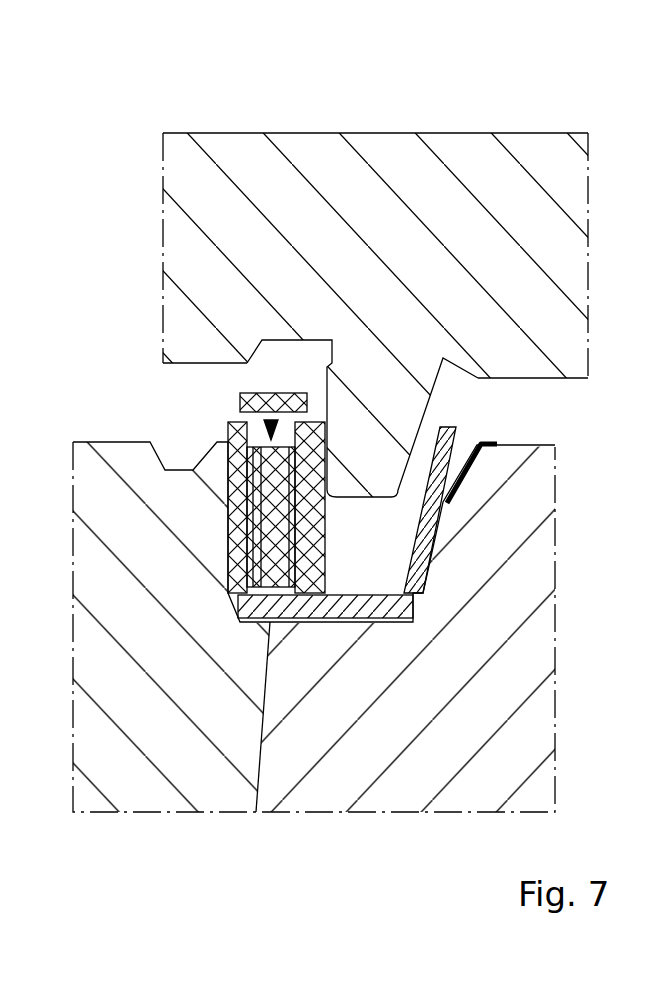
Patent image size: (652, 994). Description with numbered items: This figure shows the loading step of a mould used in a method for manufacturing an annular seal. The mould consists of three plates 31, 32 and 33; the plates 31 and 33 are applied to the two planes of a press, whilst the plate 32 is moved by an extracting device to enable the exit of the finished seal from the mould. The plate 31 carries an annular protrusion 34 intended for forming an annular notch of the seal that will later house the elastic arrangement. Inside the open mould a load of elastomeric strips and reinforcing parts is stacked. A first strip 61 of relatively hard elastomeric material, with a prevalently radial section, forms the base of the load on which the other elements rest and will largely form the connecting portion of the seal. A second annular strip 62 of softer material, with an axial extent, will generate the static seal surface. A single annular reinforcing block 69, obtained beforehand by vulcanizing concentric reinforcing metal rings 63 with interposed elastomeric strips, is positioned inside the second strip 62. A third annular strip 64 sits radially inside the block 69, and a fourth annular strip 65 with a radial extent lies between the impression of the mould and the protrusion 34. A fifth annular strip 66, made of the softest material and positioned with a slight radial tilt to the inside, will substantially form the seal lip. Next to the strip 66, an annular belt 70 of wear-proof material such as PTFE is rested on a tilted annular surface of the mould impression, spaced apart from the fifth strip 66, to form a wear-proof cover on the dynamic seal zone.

The plate 31 is at (470, 165).
The plate 32 is at (143, 793).
The plate 33 is at (392, 772).
The annular protrusion 34 is at (365, 440).
The first strip 61 is at (350, 605).
The second annular strip 62 is at (310, 620).
The reinforcing metal rings 63 is at (228, 552).
The third annular strip 64 is at (290, 493).
The fourth annular strip 65 is at (265, 392).
The fifth annular strip 66 is at (425, 560).
The single annular reinforcing block 69 is at (275, 418).
The annular belt 70 is at (462, 476).